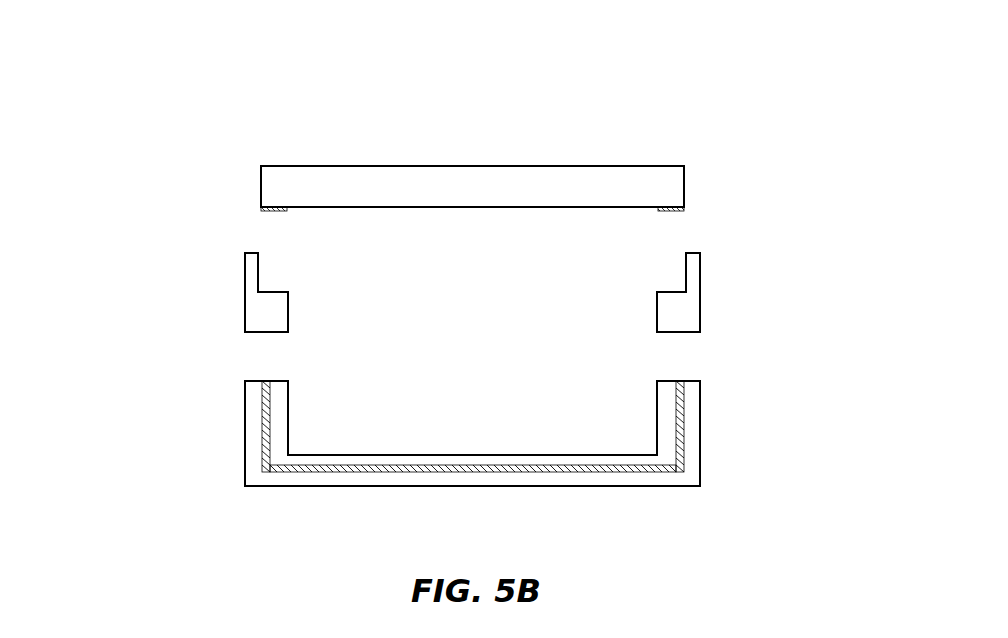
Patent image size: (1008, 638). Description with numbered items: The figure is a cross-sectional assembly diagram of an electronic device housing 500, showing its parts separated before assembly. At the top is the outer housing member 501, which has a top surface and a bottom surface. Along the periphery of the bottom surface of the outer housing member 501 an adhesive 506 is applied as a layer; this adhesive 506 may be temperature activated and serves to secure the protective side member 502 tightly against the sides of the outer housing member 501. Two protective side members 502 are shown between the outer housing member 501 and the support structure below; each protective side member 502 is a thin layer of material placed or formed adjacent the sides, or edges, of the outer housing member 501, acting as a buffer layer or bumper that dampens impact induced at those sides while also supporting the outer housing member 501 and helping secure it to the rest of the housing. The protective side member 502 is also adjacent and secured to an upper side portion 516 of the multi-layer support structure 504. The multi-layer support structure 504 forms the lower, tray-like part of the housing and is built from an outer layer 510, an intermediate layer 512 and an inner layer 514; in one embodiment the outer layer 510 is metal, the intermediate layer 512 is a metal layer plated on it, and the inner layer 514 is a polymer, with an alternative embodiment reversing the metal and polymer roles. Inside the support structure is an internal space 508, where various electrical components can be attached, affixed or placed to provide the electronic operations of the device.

The electronic device housing 500 is at (230, 72).
The outer housing member 501 is at (492, 198).
The protective side member 502 is at (243, 289).
The multi-layer support structure 504 is at (245, 428).
The adhesive 506 is at (288, 211).
The internal space 508 is at (492, 415).
The outer layer 510 is at (261, 166).
The intermediate layer 512 is at (580, 472).
The inner layer 514 is at (608, 464).
The upper side portion 516 is at (259, 380).